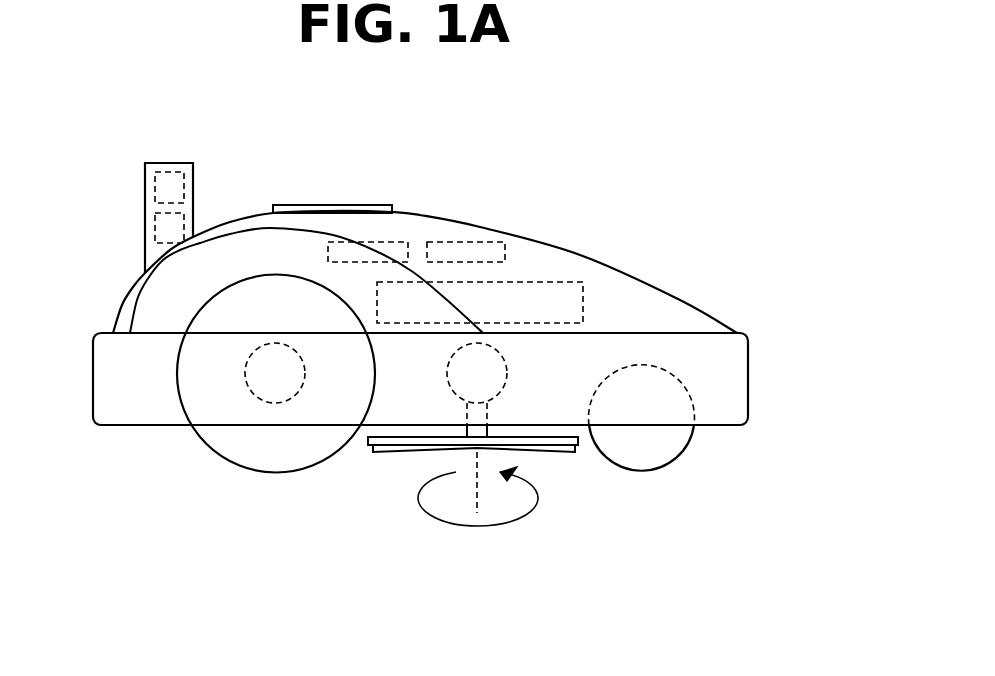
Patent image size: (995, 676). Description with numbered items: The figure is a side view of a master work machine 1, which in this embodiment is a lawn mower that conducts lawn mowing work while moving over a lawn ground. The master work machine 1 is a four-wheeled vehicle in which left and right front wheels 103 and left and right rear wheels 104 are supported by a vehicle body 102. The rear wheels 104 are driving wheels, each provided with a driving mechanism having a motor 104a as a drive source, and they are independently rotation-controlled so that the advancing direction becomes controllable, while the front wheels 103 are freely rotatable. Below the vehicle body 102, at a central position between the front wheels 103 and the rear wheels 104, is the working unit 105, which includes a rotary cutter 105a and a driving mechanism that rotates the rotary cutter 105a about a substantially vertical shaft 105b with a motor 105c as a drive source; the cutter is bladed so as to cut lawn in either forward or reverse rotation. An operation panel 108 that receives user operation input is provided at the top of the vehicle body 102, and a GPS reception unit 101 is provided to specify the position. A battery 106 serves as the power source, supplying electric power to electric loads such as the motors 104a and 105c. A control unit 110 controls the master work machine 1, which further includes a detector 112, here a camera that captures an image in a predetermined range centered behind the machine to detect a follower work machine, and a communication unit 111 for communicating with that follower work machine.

The master work machine 1 is at (252, 127).
The GPS reception unit 101 is at (385, 242).
The vehicle body 102 is at (473, 222).
The front wheels 103 is at (637, 470).
The rear wheels 104 is at (290, 472).
The motor 104a is at (270, 343).
The working unit 105 is at (378, 478).
The rotary cutter 105a is at (417, 452).
The shaft 105b is at (482, 498).
The motor 105c is at (507, 368).
The battery 106 is at (570, 282).
The operation panel 108 is at (320, 205).
The control unit 110 is at (443, 242).
The communication unit 111 is at (153, 233).
The detector 112 is at (153, 190).